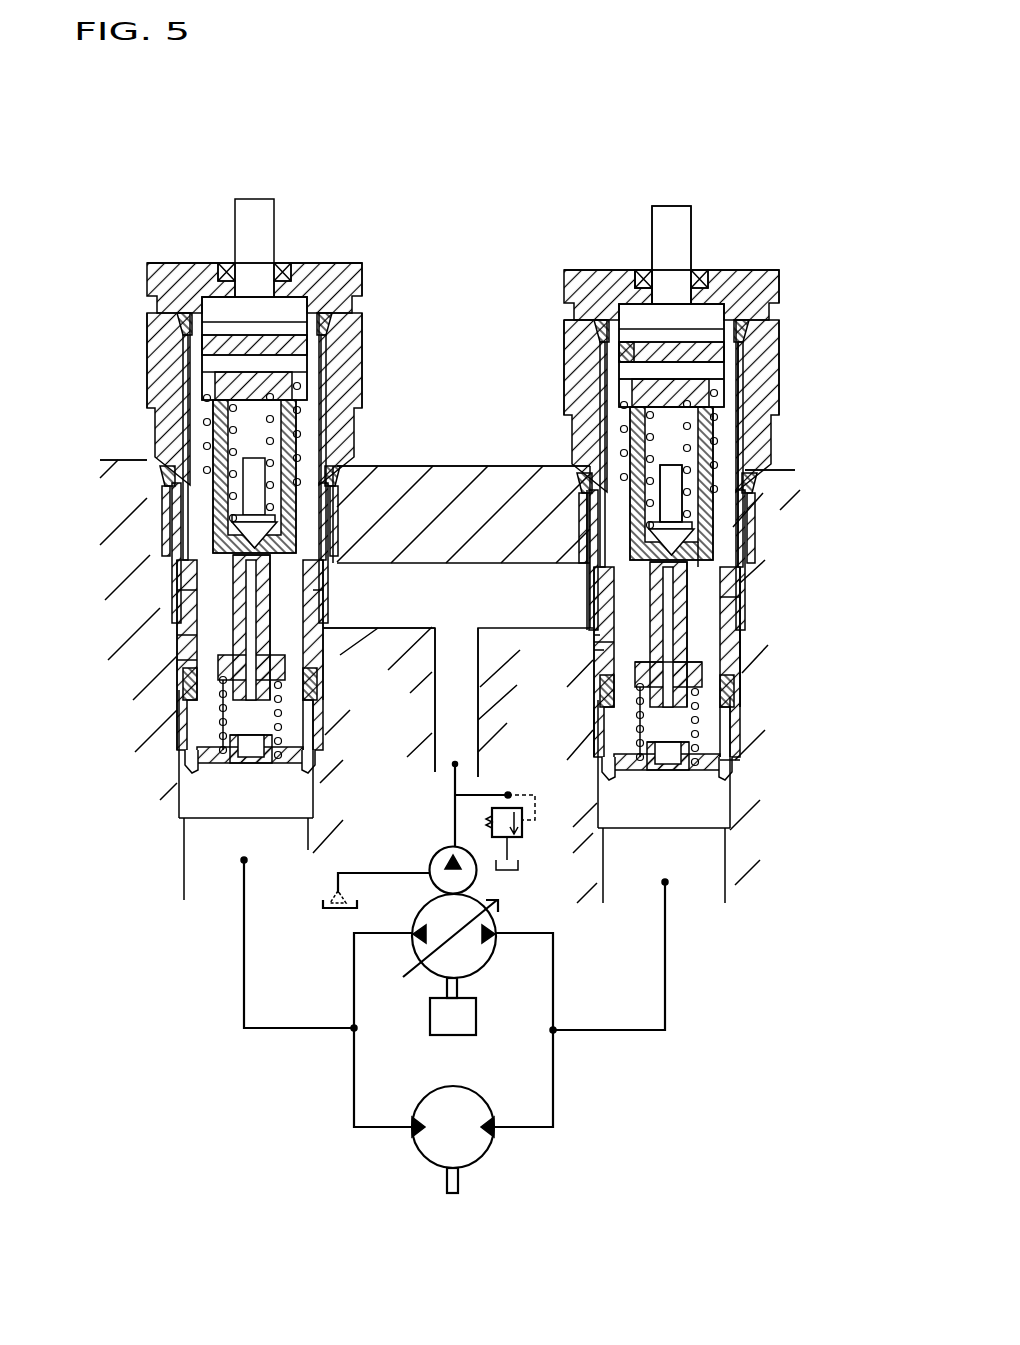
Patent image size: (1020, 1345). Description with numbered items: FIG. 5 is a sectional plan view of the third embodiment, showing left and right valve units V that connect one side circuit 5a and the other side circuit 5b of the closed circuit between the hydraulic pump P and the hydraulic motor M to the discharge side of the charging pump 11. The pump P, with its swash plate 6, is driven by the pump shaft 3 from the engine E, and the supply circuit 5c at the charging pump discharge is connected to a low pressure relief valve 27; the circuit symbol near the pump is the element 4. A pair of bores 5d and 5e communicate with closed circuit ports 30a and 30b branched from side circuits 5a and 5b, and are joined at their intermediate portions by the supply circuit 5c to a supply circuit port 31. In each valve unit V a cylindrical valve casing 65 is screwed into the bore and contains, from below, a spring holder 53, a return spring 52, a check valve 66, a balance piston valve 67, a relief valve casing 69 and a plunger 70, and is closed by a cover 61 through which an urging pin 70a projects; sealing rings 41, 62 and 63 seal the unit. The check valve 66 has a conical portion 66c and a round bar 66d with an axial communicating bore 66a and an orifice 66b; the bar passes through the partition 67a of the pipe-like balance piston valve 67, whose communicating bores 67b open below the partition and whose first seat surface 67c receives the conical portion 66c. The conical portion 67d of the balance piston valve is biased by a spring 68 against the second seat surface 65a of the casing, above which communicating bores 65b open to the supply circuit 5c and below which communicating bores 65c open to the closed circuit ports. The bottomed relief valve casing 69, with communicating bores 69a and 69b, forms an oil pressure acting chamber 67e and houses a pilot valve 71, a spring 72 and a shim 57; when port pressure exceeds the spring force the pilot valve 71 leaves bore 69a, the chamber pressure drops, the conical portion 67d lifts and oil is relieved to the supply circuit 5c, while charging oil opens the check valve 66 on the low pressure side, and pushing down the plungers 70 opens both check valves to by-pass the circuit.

The valve unit V is at (122, 236).
The cover 61 is at (200, 263).
The plunger 70 is at (215, 303).
The urging pin 70a is at (660, 222).
The seal ring 62 is at (650, 266).
The valve casing 65 is at (147, 352).
The sealing ring 41 is at (580, 312).
The seal ring 63 is at (608, 353).
The shim 57 is at (600, 390).
The spring 68 is at (600, 418).
The spring 72 is at (595, 452).
The relief valve casing 69 is at (163, 545).
The communicating bore 69a is at (750, 575).
The communicating bore 69b is at (512, 565).
The pilot valve 71 is at (740, 510).
The balance piston valve 67 is at (170, 605).
The partition 67a is at (587, 585).
The communicating bores 67b is at (597, 668).
The first seat surface 67c is at (745, 705).
The conical portion 67d is at (178, 690).
The oil pressure acting chamber 67e is at (497, 568).
The check valve 66 is at (185, 712).
The communicating bore 66a is at (185, 633).
The orifice 66b is at (188, 590).
The conical portion 66c is at (330, 613).
The round bar 66d is at (318, 592).
The second seat surface 65a is at (180, 660).
The communicating bores 65b is at (593, 623).
The communicating bores 65c is at (600, 740).
The return spring 52 is at (195, 770).
The spring holder 53 is at (190, 795).
The supply circuit 5c is at (398, 570).
The bore 5d is at (168, 503).
The bore 5e is at (770, 640).
The closed circuit port 30a is at (237, 872).
The closed circuit port 30b is at (665, 888).
The supply circuit port 31 is at (455, 770).
The low pressure relief valve 27 is at (527, 838).
The charging pump 11 is at (430, 868).
The hydraulic pump P is at (425, 905).
The swash plate 6 is at (498, 912).
The pump shaft 3 is at (458, 987).
The engine E is at (430, 1015).
The side circuit 5a is at (354, 1090).
The side circuit 5b is at (553, 1095).
The hydraulic motor M is at (425, 1160).
The motor shaft 4 is at (458, 1183).